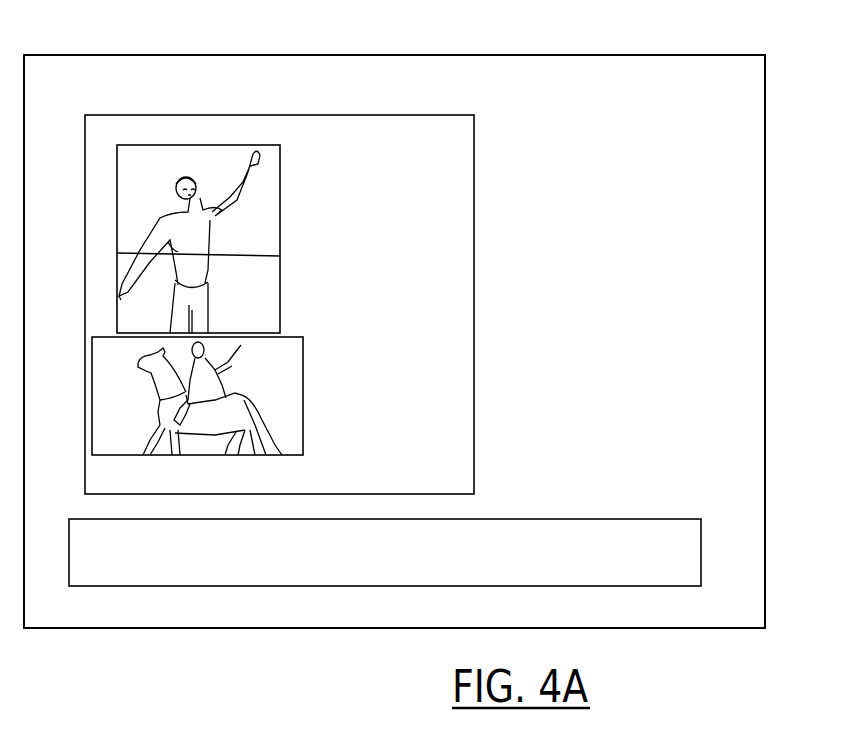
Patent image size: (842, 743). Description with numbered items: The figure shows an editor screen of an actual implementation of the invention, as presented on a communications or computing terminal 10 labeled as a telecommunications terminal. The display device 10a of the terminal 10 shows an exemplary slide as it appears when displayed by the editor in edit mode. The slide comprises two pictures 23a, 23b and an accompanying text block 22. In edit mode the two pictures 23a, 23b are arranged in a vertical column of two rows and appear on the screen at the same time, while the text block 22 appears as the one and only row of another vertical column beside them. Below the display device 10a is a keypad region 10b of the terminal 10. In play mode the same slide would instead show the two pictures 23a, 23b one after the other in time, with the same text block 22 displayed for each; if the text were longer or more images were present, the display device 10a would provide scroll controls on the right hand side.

The communications or computing terminal 10 is at (82, 53).
The display device 10a is at (477, 203).
The keypad 10b is at (573, 517).
The text block 22 is at (397, 135).
The picture 23a is at (118, 188).
The picture 23b is at (92, 370).